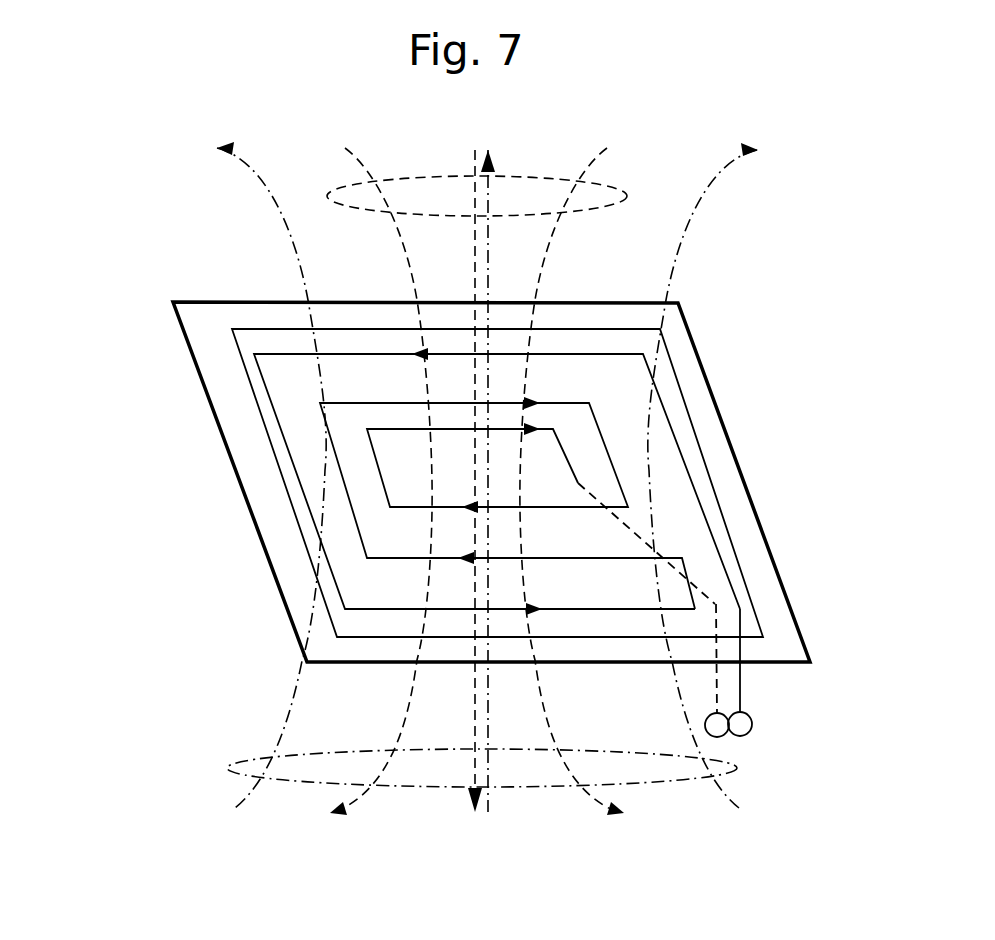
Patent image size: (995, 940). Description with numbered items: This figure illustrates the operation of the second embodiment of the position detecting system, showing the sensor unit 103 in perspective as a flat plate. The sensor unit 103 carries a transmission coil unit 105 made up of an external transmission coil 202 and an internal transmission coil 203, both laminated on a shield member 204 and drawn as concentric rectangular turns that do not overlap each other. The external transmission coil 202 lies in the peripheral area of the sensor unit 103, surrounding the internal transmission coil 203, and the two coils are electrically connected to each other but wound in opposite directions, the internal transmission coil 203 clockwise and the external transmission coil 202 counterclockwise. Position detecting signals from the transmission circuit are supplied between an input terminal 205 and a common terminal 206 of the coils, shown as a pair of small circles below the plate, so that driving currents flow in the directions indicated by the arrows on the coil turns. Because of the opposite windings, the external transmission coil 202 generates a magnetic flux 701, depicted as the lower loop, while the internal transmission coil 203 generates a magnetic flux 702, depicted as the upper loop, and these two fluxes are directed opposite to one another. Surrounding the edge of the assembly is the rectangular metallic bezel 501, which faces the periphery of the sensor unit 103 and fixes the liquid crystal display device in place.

The sensor unit 103 is at (194, 259).
The transmission coil unit 105 is at (147, 453).
The external transmission coil 202 is at (306, 499).
The internal transmission coil 203 is at (340, 464).
The shield member 204 is at (240, 353).
The input terminal 205 is at (752, 723).
The common terminal 206 is at (720, 737).
The metallic bezel 501 is at (272, 569).
The magnetic flux 701 is at (248, 756).
The magnetic flux 702 is at (334, 193).